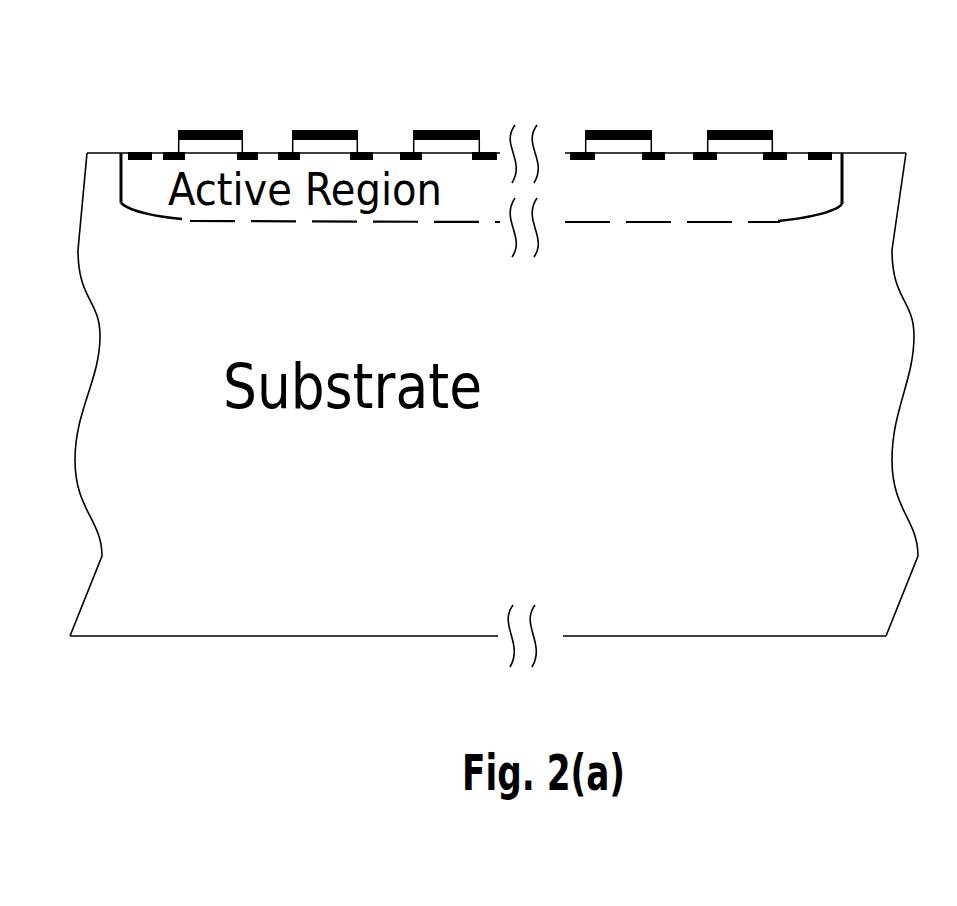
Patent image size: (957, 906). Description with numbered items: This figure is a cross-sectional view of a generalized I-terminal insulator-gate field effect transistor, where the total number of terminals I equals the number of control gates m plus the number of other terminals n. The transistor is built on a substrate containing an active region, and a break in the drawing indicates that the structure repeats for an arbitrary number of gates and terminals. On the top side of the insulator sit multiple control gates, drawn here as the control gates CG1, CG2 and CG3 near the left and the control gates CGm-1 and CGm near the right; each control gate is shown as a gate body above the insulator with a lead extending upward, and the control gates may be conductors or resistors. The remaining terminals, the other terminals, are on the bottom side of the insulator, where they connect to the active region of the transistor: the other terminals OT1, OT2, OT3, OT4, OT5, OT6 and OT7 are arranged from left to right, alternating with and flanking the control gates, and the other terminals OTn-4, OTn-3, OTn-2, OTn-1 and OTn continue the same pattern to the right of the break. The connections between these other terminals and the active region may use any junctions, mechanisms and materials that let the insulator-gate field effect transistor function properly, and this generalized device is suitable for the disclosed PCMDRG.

The other terminal OT1 is at (143, 152).
The other terminal OT2 is at (172, 152).
The other terminal OT3 is at (249, 152).
The other terminal OT4 is at (285, 152).
The other terminal OT5 is at (363, 152).
The other terminal OT6 is at (407, 152).
The other terminal OT7 is at (486, 152).
The other terminal OTn-4 is at (573, 152).
The other terminal OTn-3 is at (658, 152).
The other terminal OTn-2 is at (700, 152).
The other terminal OTn-1 is at (779, 152).
The other terminal OTn is at (816, 152).
The control gate CG1 is at (208, 130).
The control gate CG2 is at (328, 130).
The control gate CG3 is at (444, 130).
The control gate CGm-1 is at (615, 130).
The control gate CGm is at (744, 130).